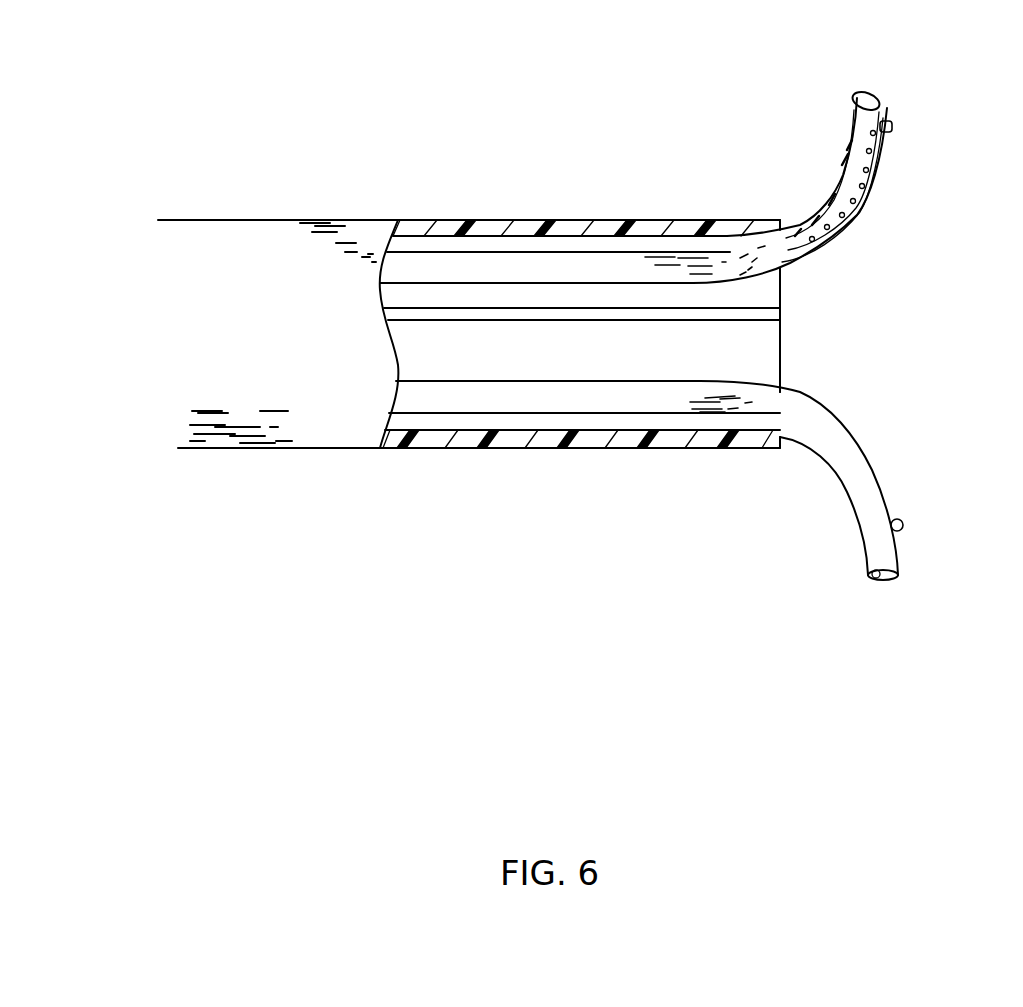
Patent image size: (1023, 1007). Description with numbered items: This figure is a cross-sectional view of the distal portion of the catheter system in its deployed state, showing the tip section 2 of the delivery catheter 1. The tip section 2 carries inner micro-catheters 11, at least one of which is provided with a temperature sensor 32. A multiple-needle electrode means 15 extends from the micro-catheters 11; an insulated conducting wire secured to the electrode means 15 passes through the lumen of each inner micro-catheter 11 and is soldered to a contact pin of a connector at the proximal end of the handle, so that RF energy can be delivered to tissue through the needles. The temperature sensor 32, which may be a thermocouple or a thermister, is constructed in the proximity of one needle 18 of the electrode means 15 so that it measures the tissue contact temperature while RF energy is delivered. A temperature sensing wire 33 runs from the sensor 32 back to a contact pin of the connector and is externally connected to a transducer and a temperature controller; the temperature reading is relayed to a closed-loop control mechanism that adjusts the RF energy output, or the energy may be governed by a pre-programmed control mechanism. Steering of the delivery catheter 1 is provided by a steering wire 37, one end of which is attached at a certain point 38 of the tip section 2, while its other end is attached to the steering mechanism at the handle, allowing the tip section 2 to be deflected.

The delivery catheter 1 is at (300, 218).
The tip section 2 is at (618, 182).
The micro-catheter 11 is at (810, 447).
The multiple-needle electrode means 15 is at (883, 178).
The needle 18 is at (903, 512).
The temperature sensor 32 is at (897, 107).
The temperature sensing wire 33 is at (838, 213).
The steering wire 37 is at (552, 322).
The attachment point 38 is at (790, 322).